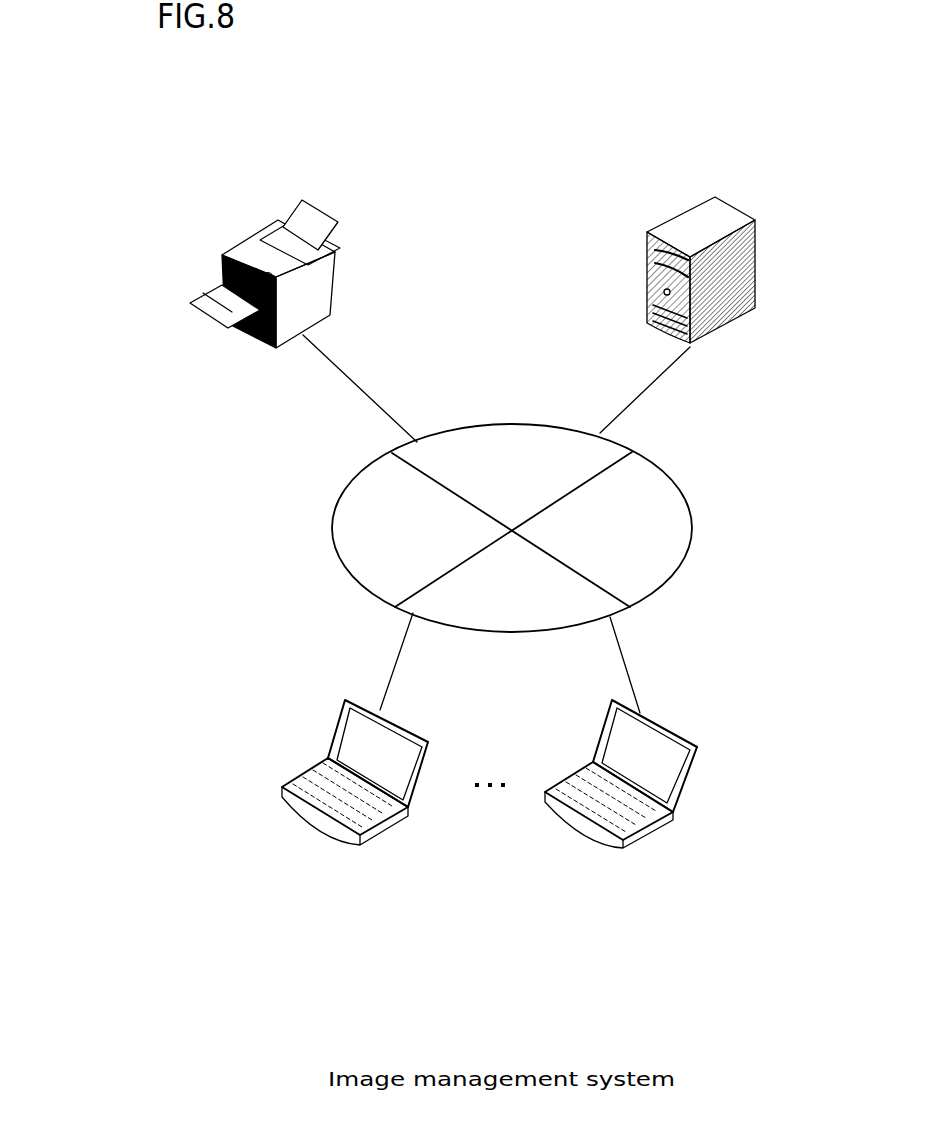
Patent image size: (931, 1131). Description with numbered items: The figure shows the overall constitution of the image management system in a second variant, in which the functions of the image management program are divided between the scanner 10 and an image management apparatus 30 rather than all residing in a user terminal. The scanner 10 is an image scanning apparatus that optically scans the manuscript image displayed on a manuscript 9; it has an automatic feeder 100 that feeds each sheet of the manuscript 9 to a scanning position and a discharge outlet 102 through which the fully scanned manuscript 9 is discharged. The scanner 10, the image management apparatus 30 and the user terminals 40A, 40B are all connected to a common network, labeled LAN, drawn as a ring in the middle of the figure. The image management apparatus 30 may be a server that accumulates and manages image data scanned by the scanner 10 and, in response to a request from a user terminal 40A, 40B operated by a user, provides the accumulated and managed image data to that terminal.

The scanner 10 is at (225, 267).
The automatic feeder 100 is at (238, 333).
The discharge outlet 102 is at (332, 250).
The manuscript 9 is at (205, 292).
The image management apparatus 30 is at (715, 196).
The user terminal 40A is at (348, 842).
The user terminal 40B is at (610, 847).
The local area network LAN is at (690, 488).